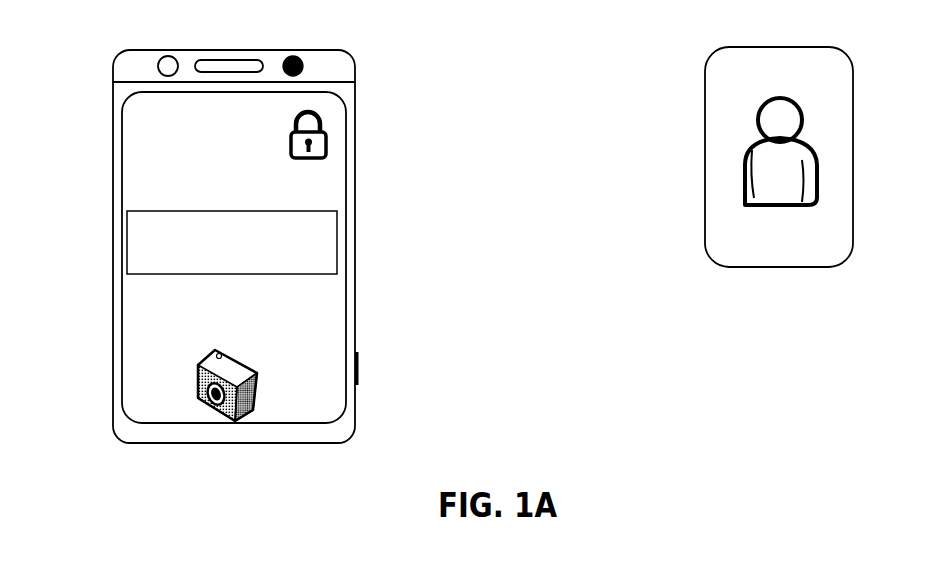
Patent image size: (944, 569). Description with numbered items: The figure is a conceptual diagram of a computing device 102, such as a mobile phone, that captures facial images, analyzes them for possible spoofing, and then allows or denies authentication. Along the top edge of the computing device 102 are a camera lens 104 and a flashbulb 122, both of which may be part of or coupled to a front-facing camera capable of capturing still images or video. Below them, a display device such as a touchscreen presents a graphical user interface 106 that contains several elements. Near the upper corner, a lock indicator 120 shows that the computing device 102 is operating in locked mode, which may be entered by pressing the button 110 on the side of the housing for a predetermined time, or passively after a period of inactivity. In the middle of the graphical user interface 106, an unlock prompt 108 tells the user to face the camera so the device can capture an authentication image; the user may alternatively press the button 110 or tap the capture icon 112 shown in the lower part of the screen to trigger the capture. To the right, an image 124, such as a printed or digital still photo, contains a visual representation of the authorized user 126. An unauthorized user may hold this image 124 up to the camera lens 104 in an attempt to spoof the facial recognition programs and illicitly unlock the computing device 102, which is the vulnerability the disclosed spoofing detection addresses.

The computing device 102 is at (118, 57).
The camera lens 104 is at (300, 57).
The graphical user interface 106 is at (122, 155).
The unlock prompt 108 is at (337, 211).
The button 110 is at (359, 382).
The capture icon 112 is at (198, 366).
The lock indicator 120 is at (325, 133).
The flashbulb 122 is at (168, 55).
The image 124 is at (707, 98).
The authorized user 126 is at (745, 170).